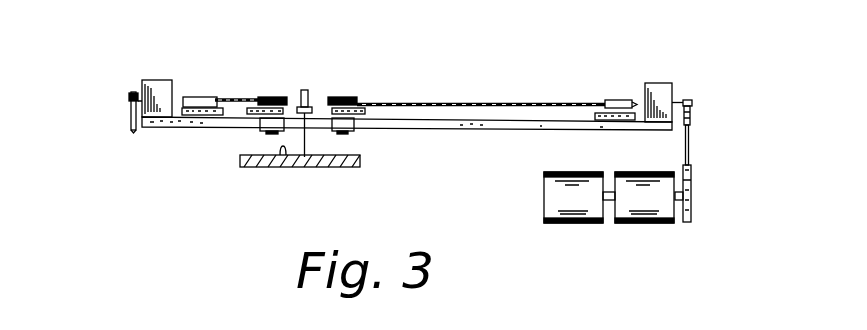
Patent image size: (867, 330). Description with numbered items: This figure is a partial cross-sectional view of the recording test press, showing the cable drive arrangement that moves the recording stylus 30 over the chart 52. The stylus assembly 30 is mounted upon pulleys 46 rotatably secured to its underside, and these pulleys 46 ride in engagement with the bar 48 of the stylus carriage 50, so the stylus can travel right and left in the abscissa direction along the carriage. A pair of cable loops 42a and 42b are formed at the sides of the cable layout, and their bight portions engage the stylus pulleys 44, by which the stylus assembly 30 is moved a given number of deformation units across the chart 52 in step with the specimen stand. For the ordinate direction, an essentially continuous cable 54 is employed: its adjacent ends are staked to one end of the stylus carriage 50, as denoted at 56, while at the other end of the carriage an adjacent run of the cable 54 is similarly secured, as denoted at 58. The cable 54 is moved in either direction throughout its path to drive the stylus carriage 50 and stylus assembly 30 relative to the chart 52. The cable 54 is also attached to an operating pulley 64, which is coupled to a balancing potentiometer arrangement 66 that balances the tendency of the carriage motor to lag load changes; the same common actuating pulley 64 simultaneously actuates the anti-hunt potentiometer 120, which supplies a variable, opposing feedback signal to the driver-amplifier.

The recording stylus 30 is at (308, 90).
The loop 42a is at (468, 103).
The loop 42b is at (217, 98).
The stylus pulleys 44 is at (262, 97).
The pulleys 46 is at (258, 122).
The bar 48 is at (485, 129).
The stylus carriage 50 is at (146, 80).
The chart 52 is at (283, 160).
The cable 54 is at (690, 118).
The staked cable ends 56 is at (692, 101).
The cable securement 58 is at (130, 106).
The operating pulley 64 is at (691, 197).
The balancing potentiometer arrangement 66 is at (630, 224).
The anti-hunt potentiometer 120 is at (544, 191).